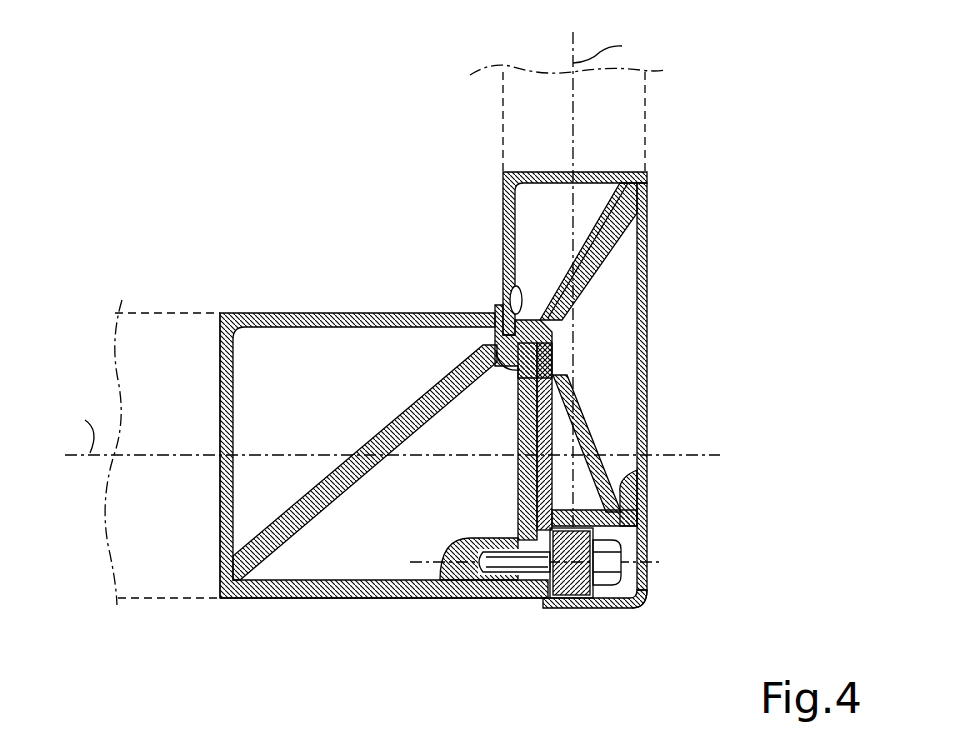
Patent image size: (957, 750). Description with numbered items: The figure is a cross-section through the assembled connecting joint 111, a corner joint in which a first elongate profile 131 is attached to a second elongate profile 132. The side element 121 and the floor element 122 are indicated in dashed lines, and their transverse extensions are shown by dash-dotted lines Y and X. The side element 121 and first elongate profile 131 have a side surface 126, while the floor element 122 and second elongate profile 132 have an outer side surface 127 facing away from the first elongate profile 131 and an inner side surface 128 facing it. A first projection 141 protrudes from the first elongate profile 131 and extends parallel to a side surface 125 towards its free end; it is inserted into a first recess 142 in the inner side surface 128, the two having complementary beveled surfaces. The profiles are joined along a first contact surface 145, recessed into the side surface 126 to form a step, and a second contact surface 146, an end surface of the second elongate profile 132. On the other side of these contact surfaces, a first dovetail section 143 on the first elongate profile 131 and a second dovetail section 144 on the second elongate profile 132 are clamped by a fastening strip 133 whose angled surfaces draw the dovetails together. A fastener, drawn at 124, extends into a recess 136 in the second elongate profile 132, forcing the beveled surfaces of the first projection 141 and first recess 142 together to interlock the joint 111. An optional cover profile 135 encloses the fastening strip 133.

The connecting joint 111 is at (343, 207).
The side element 121 is at (620, 145).
The floor element 122 is at (150, 578).
The screw 124 is at (645, 558).
The side surface 125 is at (655, 313).
The side surface 126 is at (500, 205).
The outer side surface 127 is at (358, 601).
The inner side surface 128 is at (282, 313).
The first elongate profile 131 is at (645, 268).
The second elongate profile 132 is at (284, 598).
The fastening strip 133 is at (582, 604).
The cover profile 135 is at (635, 604).
The recess 136 is at (457, 598).
The first projection 141 is at (505, 292).
The first recess 142 is at (497, 366).
The first dovetail section 143 is at (525, 515).
The second dovetail section 144 is at (530, 598).
The first contact surface 145 is at (522, 427).
The second contact surface 146 is at (548, 397).